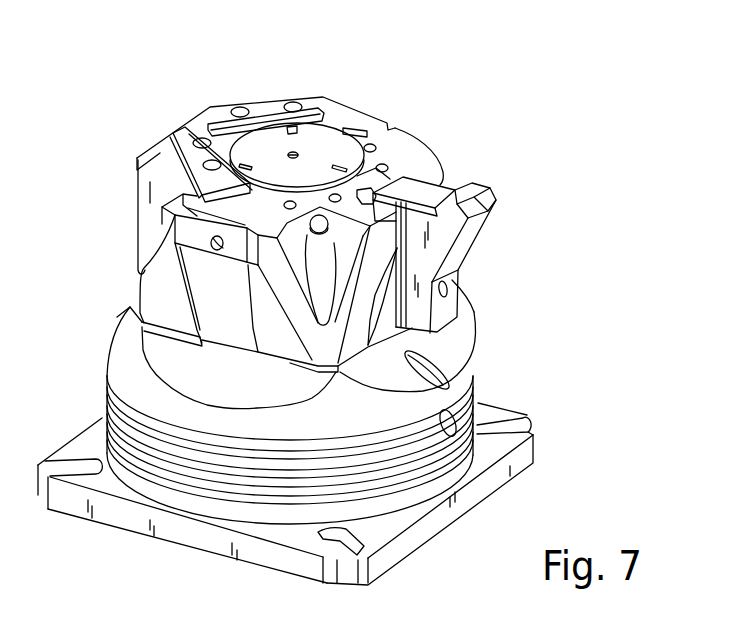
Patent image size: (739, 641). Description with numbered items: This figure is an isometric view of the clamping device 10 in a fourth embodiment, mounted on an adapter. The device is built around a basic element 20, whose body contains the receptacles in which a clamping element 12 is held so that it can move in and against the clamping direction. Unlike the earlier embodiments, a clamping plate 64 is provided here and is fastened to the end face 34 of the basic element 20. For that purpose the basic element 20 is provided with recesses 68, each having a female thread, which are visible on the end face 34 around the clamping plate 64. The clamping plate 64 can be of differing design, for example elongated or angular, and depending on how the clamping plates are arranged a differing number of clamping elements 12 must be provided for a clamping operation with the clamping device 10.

The clamping device 10 is at (181, 92).
The clamping element 12 is at (479, 250).
The basic element 20 is at (142, 260).
The end face 34 is at (400, 134).
The clamping plate 64 is at (193, 128).
The recesses 68 is at (385, 150).